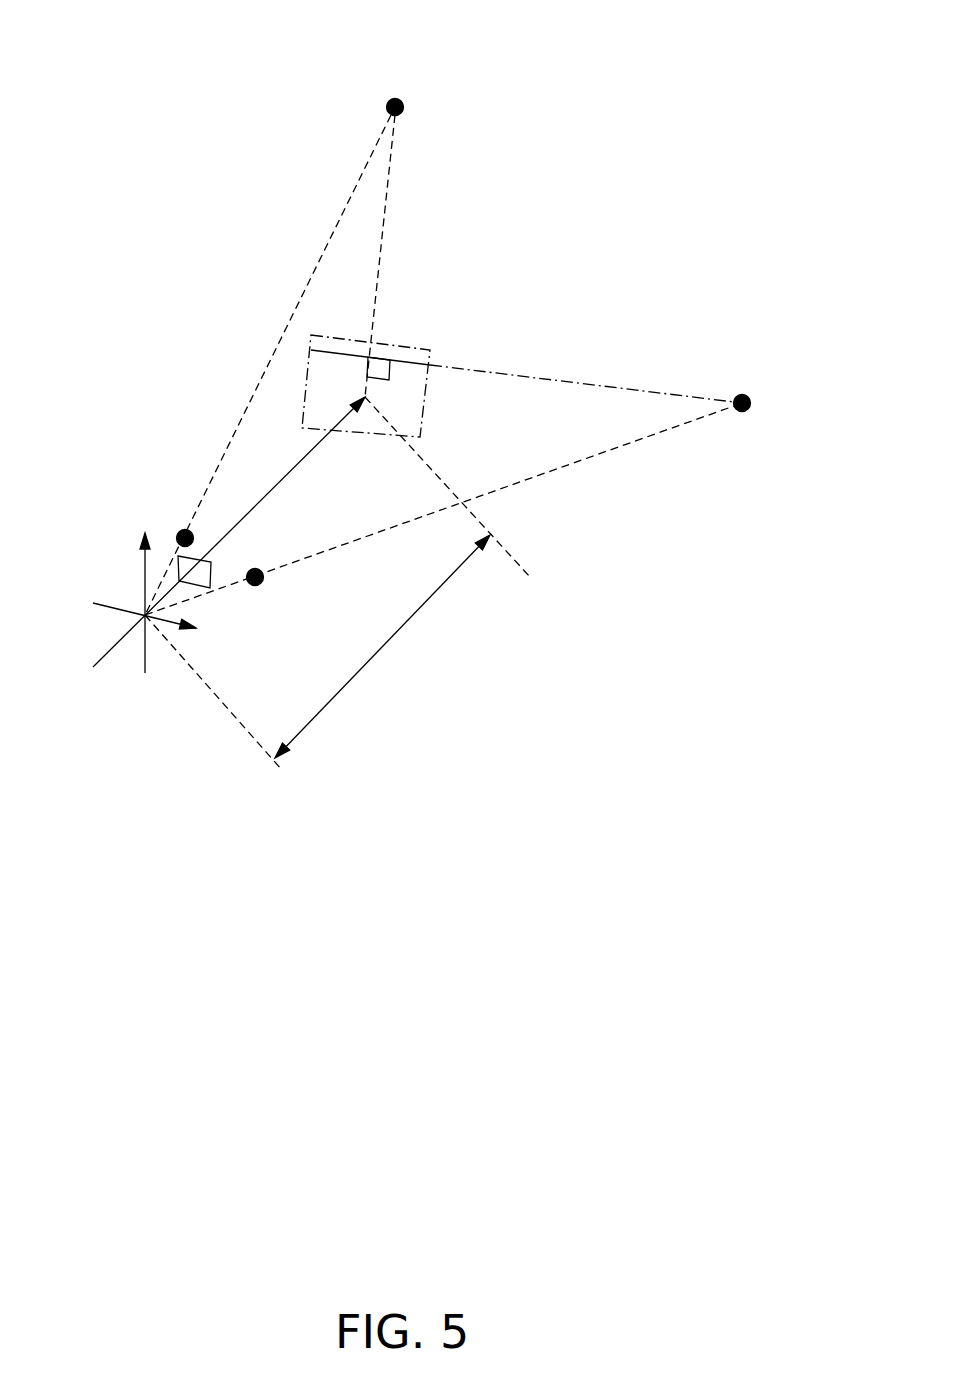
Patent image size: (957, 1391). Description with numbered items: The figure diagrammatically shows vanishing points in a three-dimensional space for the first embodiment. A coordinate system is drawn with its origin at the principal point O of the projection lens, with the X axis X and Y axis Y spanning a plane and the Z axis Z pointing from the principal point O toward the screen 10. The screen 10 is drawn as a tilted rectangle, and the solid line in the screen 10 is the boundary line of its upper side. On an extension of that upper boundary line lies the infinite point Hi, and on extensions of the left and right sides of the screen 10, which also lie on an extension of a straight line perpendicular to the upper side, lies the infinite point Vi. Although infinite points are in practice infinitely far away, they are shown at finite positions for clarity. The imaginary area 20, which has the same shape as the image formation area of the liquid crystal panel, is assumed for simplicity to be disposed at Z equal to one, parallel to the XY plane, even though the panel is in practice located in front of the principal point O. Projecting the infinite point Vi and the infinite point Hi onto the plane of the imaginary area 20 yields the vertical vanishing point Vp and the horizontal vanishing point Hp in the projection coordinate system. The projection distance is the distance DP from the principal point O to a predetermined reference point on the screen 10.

The screen 10 is at (397, 346).
The imaginary area 20 is at (208, 566).
The infinite point Vi is at (396, 98).
The infinite point Hi is at (751, 403).
The vertical vanishing point Vp is at (186, 529).
The horizontal vanishing point Hp is at (264, 578).
The distance DP is at (382, 646).
The principal point O is at (144, 605).
The X axis X is at (215, 629).
The Y axis Y is at (139, 509).
The Z axis Z is at (229, 532).